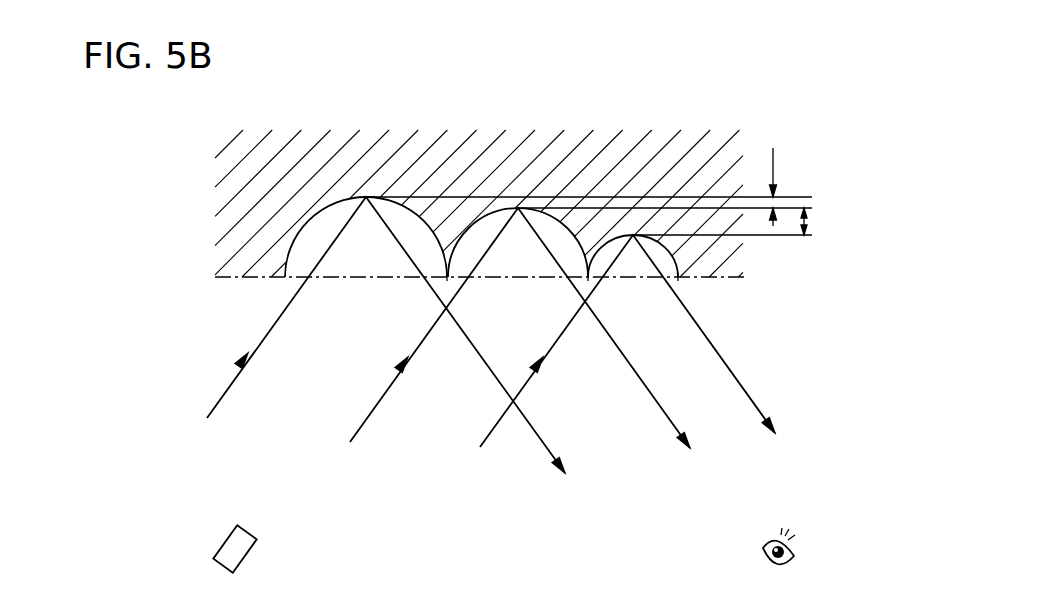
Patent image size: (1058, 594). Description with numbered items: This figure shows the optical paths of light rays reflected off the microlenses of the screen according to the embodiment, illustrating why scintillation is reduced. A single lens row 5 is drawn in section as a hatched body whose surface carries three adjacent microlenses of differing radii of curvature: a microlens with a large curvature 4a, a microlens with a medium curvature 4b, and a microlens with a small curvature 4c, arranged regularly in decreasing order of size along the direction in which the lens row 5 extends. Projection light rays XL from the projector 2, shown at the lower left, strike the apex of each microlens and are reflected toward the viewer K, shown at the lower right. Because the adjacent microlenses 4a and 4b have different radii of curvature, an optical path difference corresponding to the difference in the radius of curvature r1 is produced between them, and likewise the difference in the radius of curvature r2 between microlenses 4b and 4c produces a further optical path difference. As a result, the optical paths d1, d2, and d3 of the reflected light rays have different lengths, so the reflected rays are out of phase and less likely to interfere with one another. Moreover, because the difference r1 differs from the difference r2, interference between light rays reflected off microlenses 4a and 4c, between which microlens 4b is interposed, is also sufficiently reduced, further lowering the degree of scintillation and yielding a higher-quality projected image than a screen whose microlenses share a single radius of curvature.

The lens row 5 is at (722, 302).
The microlens with a large curvature 4a is at (316, 214).
The microlens with a medium curvature 4b is at (473, 227).
The microlens with a small curvature 4c is at (602, 246).
The difference in the radius of curvature r1 is at (589, 187).
The difference in the radius of curvature r2 is at (733, 221).
The projection light rays XL is at (283, 313).
The optical path d1 is at (430, 290).
The optical path d2 is at (572, 287).
The optical path d3 is at (677, 302).
The projector 2 is at (233, 548).
The viewer K is at (793, 555).